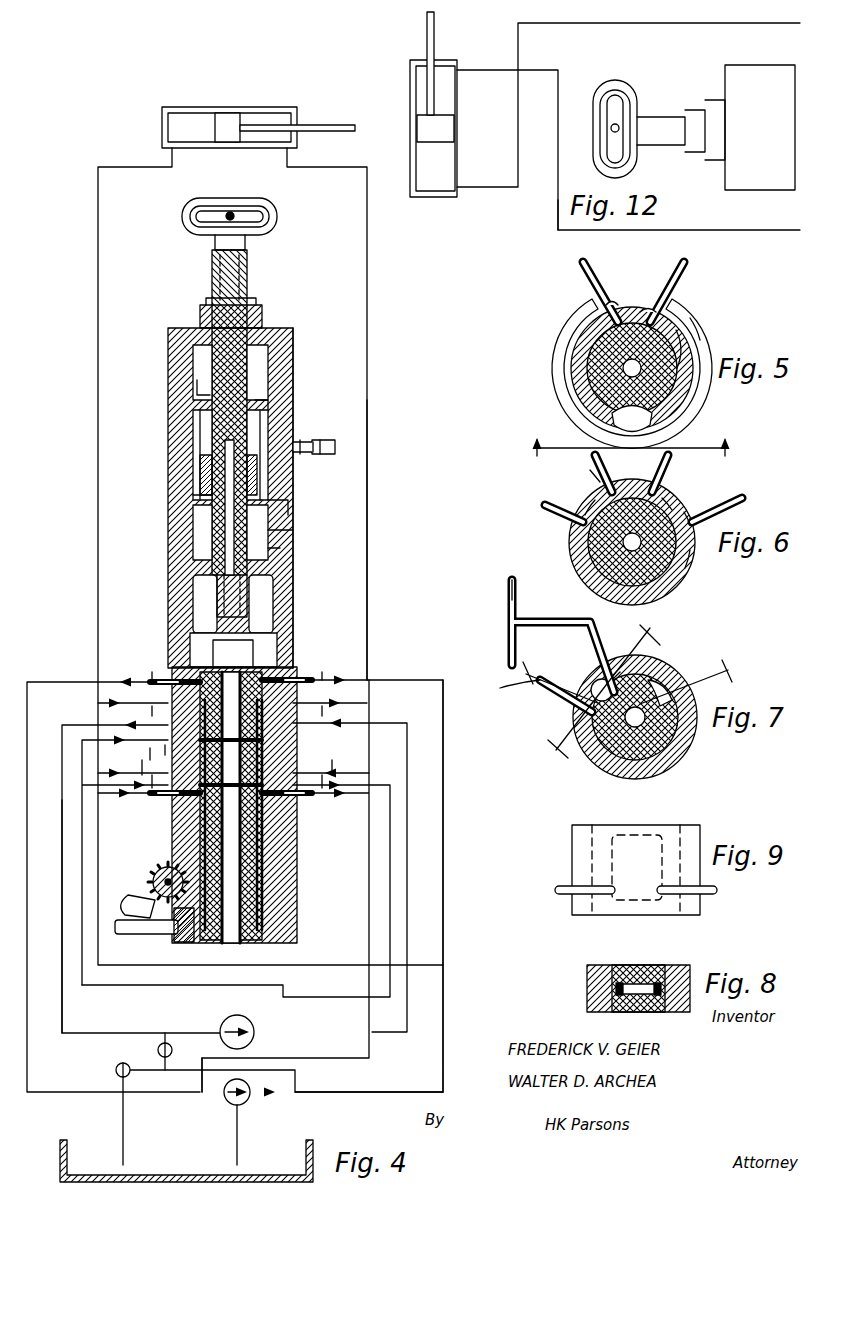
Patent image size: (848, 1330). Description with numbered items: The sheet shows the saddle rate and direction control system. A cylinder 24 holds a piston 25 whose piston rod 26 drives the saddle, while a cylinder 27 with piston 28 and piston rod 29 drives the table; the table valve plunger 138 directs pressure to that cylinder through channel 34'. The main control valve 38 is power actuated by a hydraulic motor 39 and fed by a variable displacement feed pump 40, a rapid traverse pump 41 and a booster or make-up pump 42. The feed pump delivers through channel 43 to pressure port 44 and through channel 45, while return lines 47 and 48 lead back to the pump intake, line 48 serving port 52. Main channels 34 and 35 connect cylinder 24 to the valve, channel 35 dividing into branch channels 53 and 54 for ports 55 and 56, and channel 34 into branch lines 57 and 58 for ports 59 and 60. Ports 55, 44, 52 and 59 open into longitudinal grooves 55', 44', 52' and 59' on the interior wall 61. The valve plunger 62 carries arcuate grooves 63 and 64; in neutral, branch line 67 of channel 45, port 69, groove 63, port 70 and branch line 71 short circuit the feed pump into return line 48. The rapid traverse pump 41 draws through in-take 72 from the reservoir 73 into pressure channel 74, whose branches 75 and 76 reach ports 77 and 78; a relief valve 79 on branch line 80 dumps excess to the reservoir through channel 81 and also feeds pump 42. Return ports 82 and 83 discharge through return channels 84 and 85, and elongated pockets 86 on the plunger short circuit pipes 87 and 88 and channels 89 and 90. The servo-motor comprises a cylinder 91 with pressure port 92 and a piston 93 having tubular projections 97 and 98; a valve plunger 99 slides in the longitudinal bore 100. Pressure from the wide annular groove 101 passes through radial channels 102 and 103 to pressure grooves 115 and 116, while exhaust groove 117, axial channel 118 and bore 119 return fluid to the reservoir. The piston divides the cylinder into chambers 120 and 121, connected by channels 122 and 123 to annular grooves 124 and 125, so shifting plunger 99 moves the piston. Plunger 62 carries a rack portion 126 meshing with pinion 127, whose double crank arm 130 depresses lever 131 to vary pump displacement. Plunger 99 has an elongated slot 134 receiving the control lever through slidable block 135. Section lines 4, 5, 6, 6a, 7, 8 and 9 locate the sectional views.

In FIG. 4, the cylinder 24 is at (175, 107).
In FIG. 4, the piston 25 is at (230, 115).
In FIG. 4, the piston rod 26 is at (305, 125).
In FIG. 12, the cylinder 27 is at (412, 170).
In FIG. 12, the piston 28 is at (420, 125).
In FIG. 12, the piston rod 29 is at (427, 37).
In FIG. 4, the main channel 34 is at (270, 556).
In FIG. 12, the conduit 34' is at (562, 225).
In FIG. 4, the main channel 35 is at (366, 290).
In FIG. 12, the main channel 35 is at (592, 23).
In FIG. 4, the main control valve 38 is at (170, 635).
In FIG. 7, the main control valve 38 is at (585, 762).
In FIG. 4, the hydraulic motor 39 is at (168, 418).
In FIG. 4, the variable displacement feed pump 40 is at (255, 1040).
In FIG. 4, the rapid traverse pump 41 is at (250, 1100).
In FIG. 4, the booster or make-up pump 42 is at (158, 1050).
In FIG. 4, the channel 43 is at (443, 1010).
In FIG. 6, the channel 43 is at (670, 474).
In FIG. 6, the pressure port 44 is at (643, 473).
In FIG. 6, the longitudinal groove 44' is at (675, 495).
In FIG. 4, the channel 45 is at (82, 778).
In FIG. 4, the return line 47 is at (389, 860).
In FIG. 4, the return line 48 is at (62, 835).
In FIG. 6, the return line 48 is at (590, 471).
In FIG. 7, the return line 48 is at (508, 600).
In FIG. 6, the port 52 is at (586, 478).
In FIG. 6, the longitudinal groove 52' is at (551, 498).
In FIG. 4, the branch channel 53 is at (360, 703).
In FIG. 6, the branch channel 53 is at (735, 498).
In FIG. 4, the branch channel 54 is at (369, 770).
In FIG. 4, the port 55 is at (305, 689).
In FIG. 6, the port 55 is at (700, 502).
In FIG. 5, the longitudinal groove 55' is at (710, 342).
In FIG. 6, the longitudinal groove 55' is at (715, 568).
In FIG. 4, the port 56 is at (296, 773).
In FIG. 4, the branch line 57 is at (110, 703).
In FIG. 6, the branch line 57 is at (545, 506).
In FIG. 4, the branch line 58 is at (144, 749).
In FIG. 4, the port 59 is at (153, 670).
In FIG. 6, the port 59 is at (611, 542).
In FIG. 5, the longitudinal groove 59' is at (605, 368).
In FIG. 6, the longitudinal groove 59' is at (601, 542).
In FIG. 4, the port 60 is at (167, 744).
In FIG. 4, the interior wall 61 is at (290, 590).
In FIG. 4, the valve plunger 62 is at (252, 655).
In FIG. 5, the valve plunger 62 is at (590, 395).
In FIG. 7, the valve plunger 62 is at (598, 782).
In FIG. 7, the arcuate groove 63 is at (595, 668).
In FIG. 8, the arcuate groove 63 is at (622, 965).
In FIG. 7, the arcuate groove 64 is at (667, 672).
In FIG. 4, the branch line 67 is at (80, 725).
In FIG. 7, the branch line 67 is at (520, 688).
In FIG. 7, the port 69 is at (588, 688).
In FIG. 8, the port 69 is at (590, 988).
In FIG. 7, the port 70 is at (620, 668).
In FIG. 7, the branch line 71 is at (550, 620).
In FIG. 4, the in-take 72 is at (238, 1130).
In FIG. 4, the reservoir 73 is at (300, 1145).
In FIG. 4, the pressure channel 74 is at (352, 1092).
In FIG. 4, the branch 75 is at (412, 680).
In FIG. 5, the branch 75 is at (682, 268).
In FIG. 4, the branch 76 is at (114, 795).
In FIG. 5, the port 77 is at (648, 315).
In FIG. 4, the port 78 is at (205, 812).
In FIG. 4, the relief valve 79 is at (116, 1070).
In FIG. 8, the relief valve 79 is at (660, 967).
In FIG. 4, the branch line 80 is at (190, 1072).
In FIG. 4, the channel 81 is at (124, 1124).
In FIG. 5, the return rapid traverse port 82 is at (612, 300).
In FIG. 4, the return rapid traverse port 83 is at (295, 825).
In FIG. 4, the return channel 84 is at (58, 680).
In FIG. 5, the return channel 84 is at (582, 288).
In FIG. 4, the return channel 85 is at (369, 885).
In FIG. 4, the elongated pocket 86 is at (262, 627).
In FIG. 5, the elongated pocket 86 is at (620, 416).
In FIG. 9, the elongated pocket 86 is at (637, 870).
In FIG. 5, the pipe 87 is at (700, 330).
In FIG. 9, the pipe 87 is at (700, 895).
In FIG. 5, the pipe 88 is at (553, 358).
In FIG. 9, the pipe 88 is at (562, 893).
In FIG. 4, the channel 89 is at (310, 796).
In FIG. 4, the channel 90 is at (173, 795).
In FIG. 4, the cylinder 91 is at (290, 386).
In FIG. 4, the pressure port 92 is at (320, 450).
In FIG. 4, the piston 93 is at (286, 522).
In FIG. 4, the tubular projection 97 is at (206, 312).
In FIG. 4, the tubular projection 98 is at (290, 560).
In FIG. 4, the valve plunger 99 is at (246, 296).
In FIG. 4, the longitudinal bore 100 is at (258, 318).
In FIG. 4, the annular groove 101 is at (270, 491).
In FIG. 4, the radial channel 102 is at (282, 507).
In FIG. 4, the radial channel 103 is at (275, 410).
In FIG. 4, the annular pressure groove 115 is at (292, 536).
In FIG. 4, the annular pressure groove 116 is at (258, 378).
In FIG. 4, the annular exhaust groove 117 is at (268, 476).
In FIG. 4, the axial channel 118 is at (275, 548).
In FIG. 4, the bore 119 is at (240, 945).
In FIG. 5, the bore 119 is at (622, 371).
In FIG. 6, the bore 119 is at (605, 565).
In FIG. 7, the bore 119 is at (612, 795).
In FIG. 4, the chamber 120 is at (200, 531).
In FIG. 4, the chamber 121 is at (195, 352).
In FIG. 4, the channel 122 is at (200, 500).
In FIG. 4, the channel 123 is at (193, 392).
In FIG. 4, the annular groove 124 is at (200, 471).
In FIG. 4, the annular groove 125 is at (200, 433).
In FIG. 4, the rack portion 126 is at (165, 932).
In FIG. 4, the pinion 127 is at (152, 870).
In FIG. 4, the double crank arm 130 is at (135, 898).
In FIG. 4, the lever 131 is at (125, 935).
In FIG. 4, the elongated slot 134 is at (262, 207).
In FIG. 4, the slidable block 135 is at (230, 210).
In FIG. 12, the valve plunger 138 is at (665, 120).
In FIG. 7, the section line 4 is at (627, 672).
In FIG. 4, the section line 5 is at (235, 668).
In FIG. 4, the section line 6 is at (242, 716).
In FIG. 4, the section line 6a is at (247, 772).
In FIG. 4, the section line 7 is at (230, 760).
In FIG. 7, the section line 8 is at (600, 688).
In FIG. 5, the section line 9 is at (630, 438).